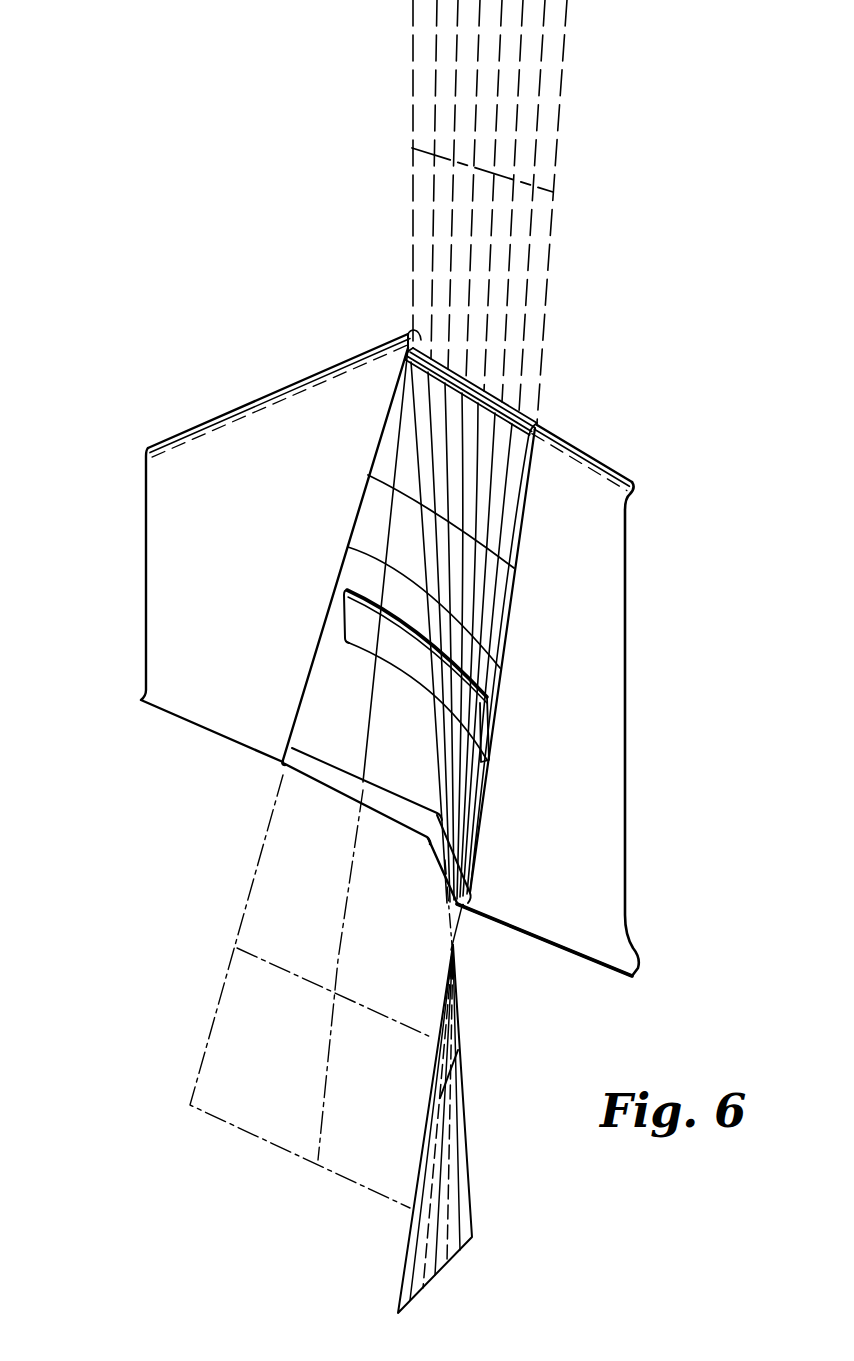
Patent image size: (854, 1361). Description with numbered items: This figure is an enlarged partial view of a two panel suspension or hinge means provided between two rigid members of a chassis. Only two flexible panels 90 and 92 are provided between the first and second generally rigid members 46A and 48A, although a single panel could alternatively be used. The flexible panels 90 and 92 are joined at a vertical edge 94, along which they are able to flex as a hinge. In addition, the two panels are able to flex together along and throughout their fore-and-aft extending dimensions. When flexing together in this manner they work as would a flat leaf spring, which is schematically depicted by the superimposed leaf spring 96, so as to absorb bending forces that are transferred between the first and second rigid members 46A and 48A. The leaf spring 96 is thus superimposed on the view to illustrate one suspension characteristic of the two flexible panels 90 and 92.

The first generally rigid member 46A is at (625, 723).
The second generally rigid member 48A is at (146, 560).
The flexible panel 90 is at (486, 495).
The flexible panel 92 is at (352, 725).
The vertical edge 94 is at (424, 537).
The leaf spring 96 is at (366, 618).